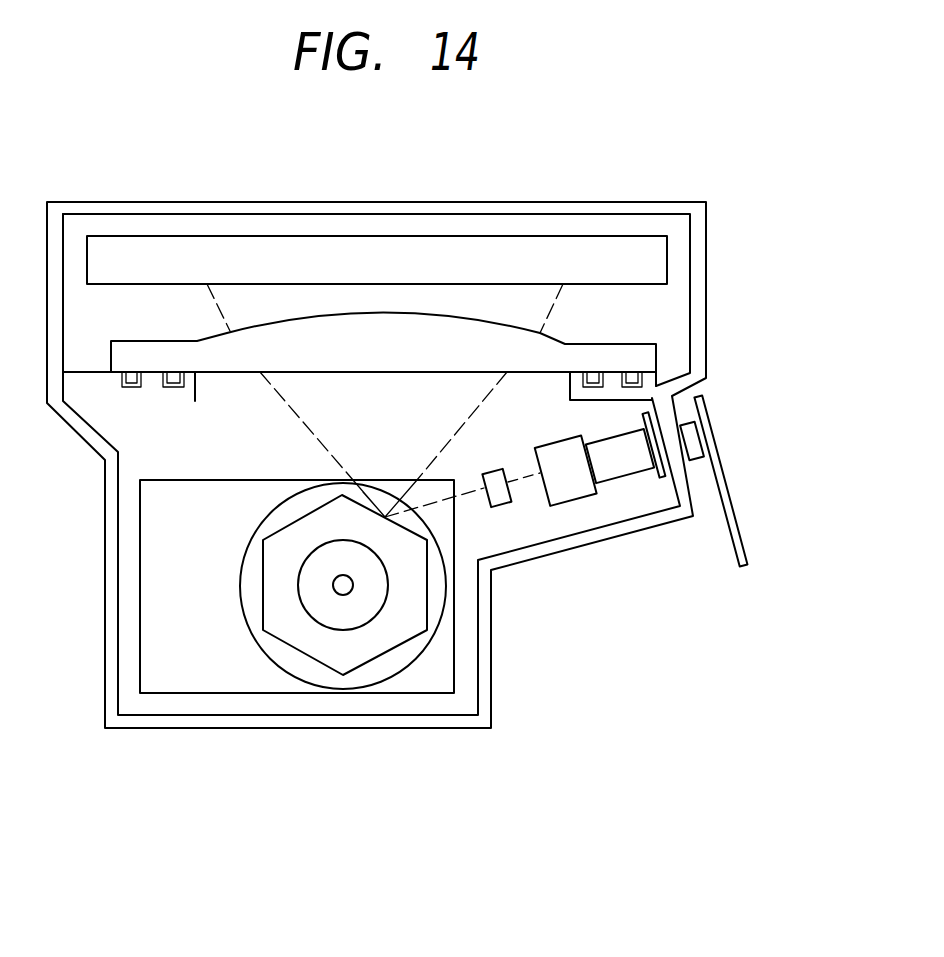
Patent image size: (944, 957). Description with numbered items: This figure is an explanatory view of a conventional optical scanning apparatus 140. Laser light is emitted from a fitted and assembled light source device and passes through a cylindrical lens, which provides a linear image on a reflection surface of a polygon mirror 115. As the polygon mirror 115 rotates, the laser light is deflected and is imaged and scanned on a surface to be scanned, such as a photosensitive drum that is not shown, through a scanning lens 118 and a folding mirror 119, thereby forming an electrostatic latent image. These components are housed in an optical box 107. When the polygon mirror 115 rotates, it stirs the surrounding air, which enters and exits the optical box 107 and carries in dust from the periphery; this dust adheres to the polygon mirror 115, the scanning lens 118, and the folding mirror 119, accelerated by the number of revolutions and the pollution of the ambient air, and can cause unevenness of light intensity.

The optical box 107 is at (673, 337).
The polygon mirror 115 is at (382, 643).
The scanning lens 118 is at (640, 337).
The folding mirror 119 is at (655, 261).
The optical scanning apparatus 140 is at (446, 498).